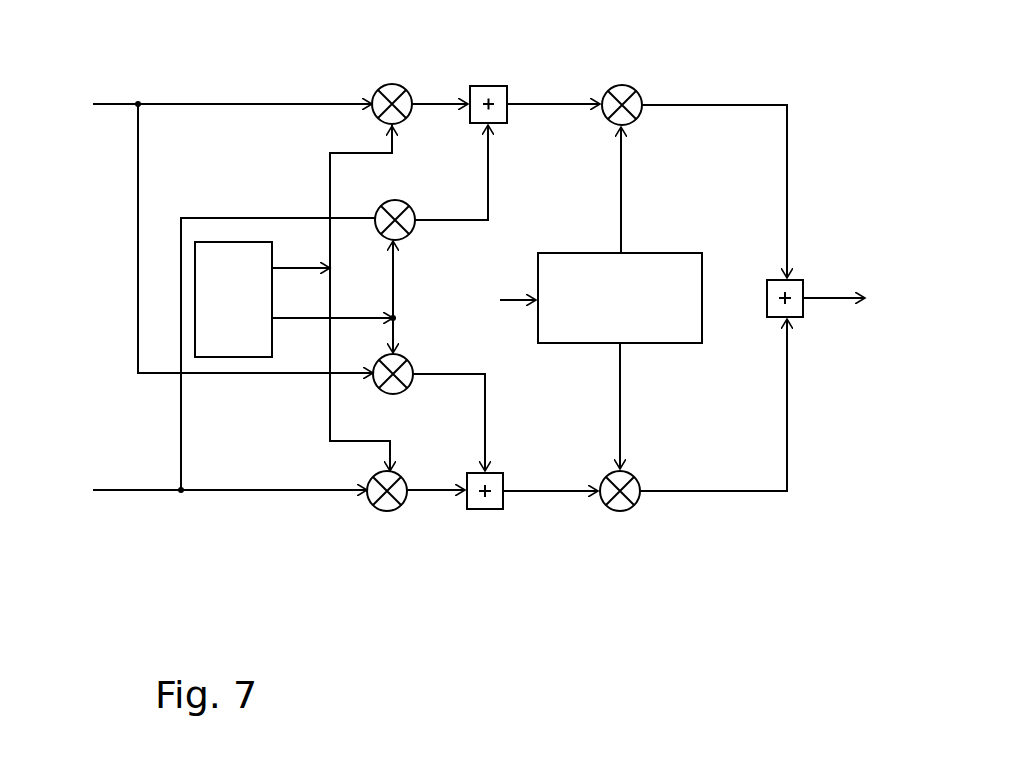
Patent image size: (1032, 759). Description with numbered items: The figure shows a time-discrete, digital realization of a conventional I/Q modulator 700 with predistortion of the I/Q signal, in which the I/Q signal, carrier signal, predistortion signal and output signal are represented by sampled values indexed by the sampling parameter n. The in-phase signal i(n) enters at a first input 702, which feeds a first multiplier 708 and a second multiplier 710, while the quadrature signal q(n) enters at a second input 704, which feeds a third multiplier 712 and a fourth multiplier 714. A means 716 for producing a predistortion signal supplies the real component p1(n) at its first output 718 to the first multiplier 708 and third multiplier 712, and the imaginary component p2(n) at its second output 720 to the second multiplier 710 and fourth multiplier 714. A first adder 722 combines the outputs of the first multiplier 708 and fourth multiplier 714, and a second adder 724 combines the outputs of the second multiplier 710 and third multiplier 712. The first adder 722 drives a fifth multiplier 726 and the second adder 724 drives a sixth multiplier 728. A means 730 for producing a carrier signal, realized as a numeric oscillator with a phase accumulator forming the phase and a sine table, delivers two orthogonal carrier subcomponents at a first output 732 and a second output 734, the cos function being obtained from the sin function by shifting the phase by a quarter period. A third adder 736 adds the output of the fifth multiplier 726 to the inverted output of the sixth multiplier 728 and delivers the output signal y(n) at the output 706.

The I/Q modulator 700 is at (900, 94).
The first input 702 is at (125, 101).
The second input 704 is at (130, 492).
The output 706 is at (825, 300).
The first multiplier 708 is at (372, 100).
The second multiplier 710 is at (413, 366).
The third multiplier 712 is at (378, 512).
The fourth multiplier 714 is at (414, 230).
The means for producing a predistortion signal 716 is at (245, 242).
The first output of the means for producing the predistortion signal 718 is at (283, 266).
The second output of the means for producing the predistortion signal 720 is at (310, 320).
The first adder 722 is at (486, 85).
The second adder 724 is at (487, 511).
The fifth multiplier 726 is at (641, 97).
The sixth multiplier 728 is at (640, 508).
The means for producing a carrier signal 730 is at (700, 343).
The first output of the means for producing a carrier signal 732 is at (618, 238).
The second output of the means for producing a carrier signal 734 is at (615, 392).
The third adder 736 is at (805, 285).